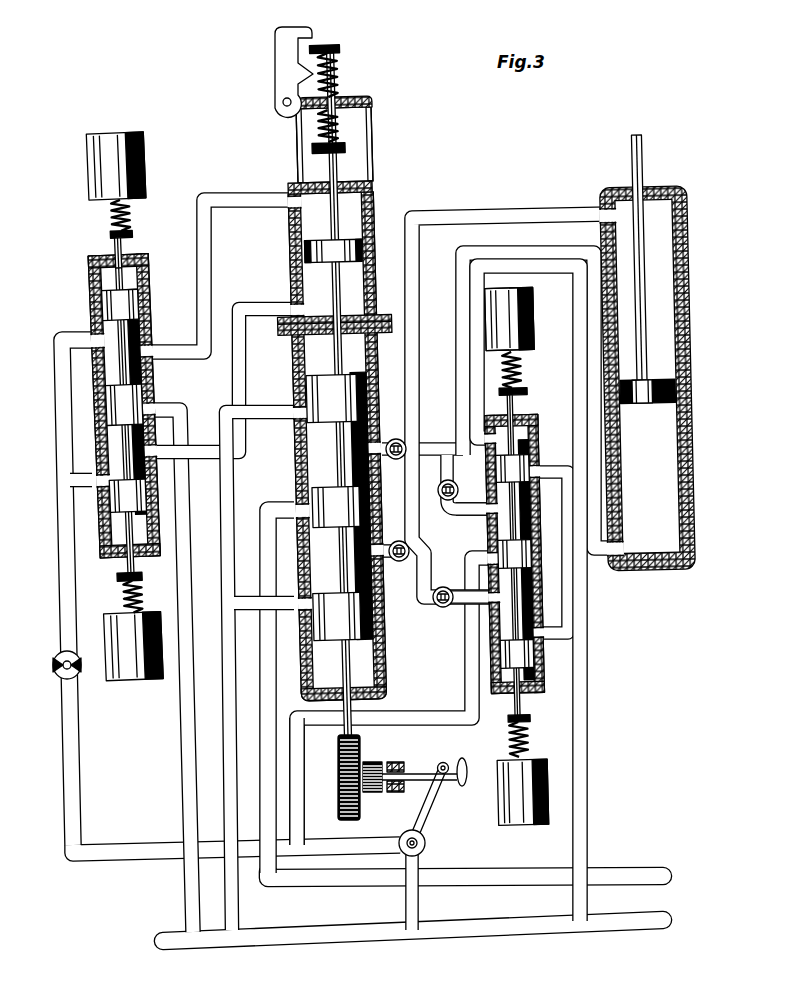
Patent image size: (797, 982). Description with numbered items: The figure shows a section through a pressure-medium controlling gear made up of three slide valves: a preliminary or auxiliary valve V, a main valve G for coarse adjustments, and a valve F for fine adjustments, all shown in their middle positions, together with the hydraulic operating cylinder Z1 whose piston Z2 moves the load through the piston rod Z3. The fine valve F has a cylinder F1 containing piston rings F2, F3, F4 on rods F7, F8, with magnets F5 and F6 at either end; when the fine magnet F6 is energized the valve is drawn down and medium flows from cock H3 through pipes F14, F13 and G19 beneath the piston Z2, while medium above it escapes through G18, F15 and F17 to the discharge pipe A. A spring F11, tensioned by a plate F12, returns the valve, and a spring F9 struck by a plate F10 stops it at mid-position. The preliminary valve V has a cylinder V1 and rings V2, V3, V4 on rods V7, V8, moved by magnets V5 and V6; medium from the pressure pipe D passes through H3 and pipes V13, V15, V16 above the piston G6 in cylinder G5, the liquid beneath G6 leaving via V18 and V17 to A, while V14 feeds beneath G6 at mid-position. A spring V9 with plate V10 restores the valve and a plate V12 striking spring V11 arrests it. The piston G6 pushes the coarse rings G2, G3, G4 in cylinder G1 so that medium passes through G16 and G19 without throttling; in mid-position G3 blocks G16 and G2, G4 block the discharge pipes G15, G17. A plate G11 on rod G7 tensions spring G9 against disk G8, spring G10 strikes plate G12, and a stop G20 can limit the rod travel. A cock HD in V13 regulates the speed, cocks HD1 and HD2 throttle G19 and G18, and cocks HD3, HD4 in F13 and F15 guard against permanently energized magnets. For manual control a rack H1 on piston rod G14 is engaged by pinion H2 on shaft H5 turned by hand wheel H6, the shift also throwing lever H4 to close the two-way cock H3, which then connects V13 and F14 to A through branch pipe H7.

The discharge pipe A is at (634, 927).
The pressure pipe D is at (607, 872).
The preliminary or auxiliary valve V is at (92, 272).
The cylinder of preliminary valve V1 is at (106, 300).
The piston ring of preliminary slide valve V2 is at (140, 306).
The piston ring of preliminary slide valve V3 is at (150, 405).
The piston ring of preliminary slide valve V4 is at (108, 502).
The magnet V5 is at (115, 150).
The magnet V6 is at (131, 680).
The valve rod V7 is at (117, 246).
The valve rod V8 is at (118, 570).
The spring V9 is at (110, 216).
The plate V10 is at (130, 233).
The spring V11 is at (133, 590).
The plate V12 is at (112, 592).
The supply pipe V13 is at (143, 847).
The pipe V14 is at (77, 476).
The pipe V15 is at (55, 345).
The pipe V16 is at (180, 350).
The pipe V17 is at (186, 735).
The pipe V18 is at (239, 352).
The main valve G is at (326, 404).
The cylinder G1 is at (295, 475).
The piston ring of coarse slide valve G2 is at (370, 420).
The piston ring of coarse slide valve G3 is at (333, 450).
The piston ring of coarse slide valve G4 is at (337, 616).
The cylinder G5 is at (372, 245).
The piston G6 is at (295, 260).
The valve rod G7 is at (340, 215).
The disk G8 is at (366, 100).
The spring G9 is at (338, 80).
The spring G10 is at (338, 135).
The plate G11 is at (337, 47).
The plate G12 is at (346, 150).
The piston rod G14 is at (340, 708).
The discharge pipe G15 is at (265, 408).
The pipe G16 is at (262, 708).
The discharge pipe G17 is at (245, 607).
The pipe G18 is at (503, 216).
The pipe G19 is at (570, 262).
The stop G20 is at (276, 40).
The cock HD is at (59, 678).
The cock HD1 is at (420, 410).
The cock HD2 is at (404, 572).
The cock HD3 is at (437, 443).
The cock HD4 is at (421, 577).
The fine valve F is at (510, 309).
The cylinder of fine valve F1 is at (541, 445).
The piston ring of fine slide valve F2 is at (453, 487).
The piston ring of fine slide valve F3 is at (535, 558).
The piston ring of fine slide valve F4 is at (500, 652).
The fine valve magnet F5 is at (534, 320).
The fine magnet F6 is at (526, 825).
The valve rod F7 is at (509, 406).
The valve rod F8 is at (548, 672).
The spring F9 is at (522, 377).
The plate F10 is at (526, 392).
The spring F11 is at (525, 748).
The plate F12 is at (531, 719).
The branch pipe F13 is at (470, 510).
The pipe F14 is at (438, 716).
The branch pipe F15 is at (443, 607).
The pipe F17 is at (588, 760).
The hydraulic operating cylinder Z1 is at (687, 282).
The piston Z2 is at (644, 404).
The piston rod Z3 is at (646, 176).
The rack H1 is at (337, 778).
The pinion H2 is at (368, 764).
The cock H3 is at (419, 851).
The lever H4 is at (427, 805).
The shaft H5 is at (420, 773).
The hand wheel H6 is at (464, 760).
The branch pipe H7 is at (418, 905).